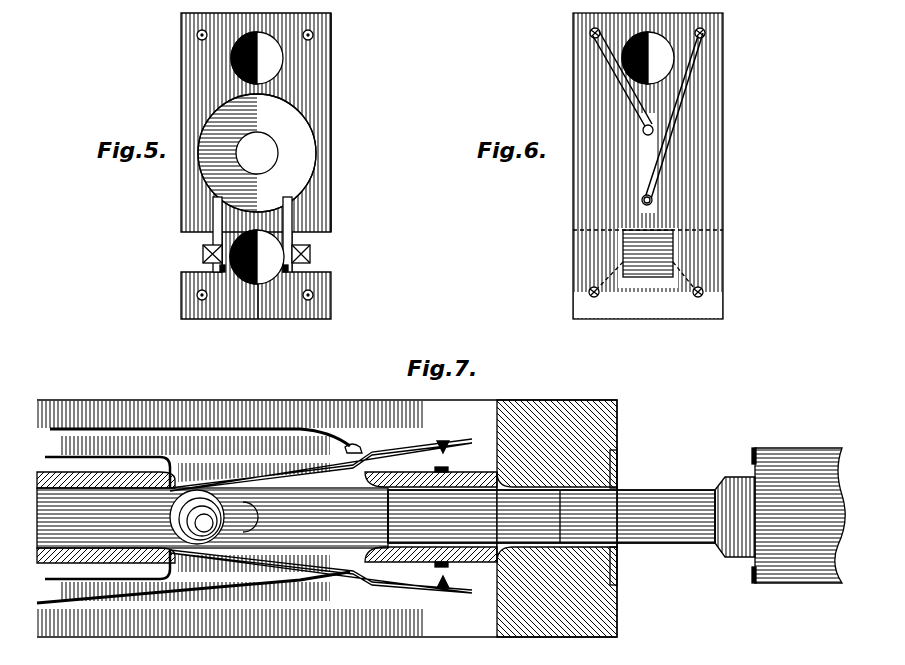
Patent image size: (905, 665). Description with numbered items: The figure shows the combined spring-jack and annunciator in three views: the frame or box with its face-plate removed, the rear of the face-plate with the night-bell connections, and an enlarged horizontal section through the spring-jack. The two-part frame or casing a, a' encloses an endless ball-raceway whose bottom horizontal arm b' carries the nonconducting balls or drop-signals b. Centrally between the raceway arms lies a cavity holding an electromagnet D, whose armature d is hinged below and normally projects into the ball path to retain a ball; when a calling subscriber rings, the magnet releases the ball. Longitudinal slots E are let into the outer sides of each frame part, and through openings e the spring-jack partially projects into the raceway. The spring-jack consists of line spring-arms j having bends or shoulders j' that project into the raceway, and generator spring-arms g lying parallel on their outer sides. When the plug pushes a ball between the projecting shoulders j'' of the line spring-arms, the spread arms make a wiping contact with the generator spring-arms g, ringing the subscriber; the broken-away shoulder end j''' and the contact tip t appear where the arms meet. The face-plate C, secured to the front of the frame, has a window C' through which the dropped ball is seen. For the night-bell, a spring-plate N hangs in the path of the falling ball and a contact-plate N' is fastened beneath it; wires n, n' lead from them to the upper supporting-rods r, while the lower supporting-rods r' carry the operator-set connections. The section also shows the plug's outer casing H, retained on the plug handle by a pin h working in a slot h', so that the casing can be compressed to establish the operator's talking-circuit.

In FIG. 5, the frame part a is at (240, 166).
In FIG. 5, the frame part a' is at (345, 122).
In FIG. 5, the electromagnet D is at (262, 130).
In FIG. 5, the armature d is at (264, 175).
In FIG. 5, the longitudinal recesses or slots E is at (181, 232).
In FIG. 7, the longitudinal recesses or slots E is at (222, 402).
In FIG. 5, the bottom horizontal arm b' is at (257, 268).
In FIG. 7, the bottom horizontal arm b' is at (212, 517).
In FIG. 6, the upper supporting-rods r is at (640, 37).
In FIG. 6, the wire n is at (598, 83).
In FIG. 6, the face-plate C is at (659, 166).
In FIG. 7, the face-plate C is at (491, 506).
In FIG. 6, the wire n' is at (700, 117).
In FIG. 6, the spring-plate N is at (671, 181).
In FIG. 6, the contact-plate N' is at (598, 208).
In FIG. 6, the window C' is at (648, 253).
In FIG. 6, the lower supporting-rods r' is at (606, 282).
In FIG. 6, the lower right pin r'' is at (685, 283).
In FIG. 7, the generator spring-arms g is at (262, 432).
In FIG. 7, the line spring-arms j is at (107, 508).
In FIG. 7, the bends or shoulders j' is at (321, 465).
In FIG. 7, the projecting shoulders j'' is at (321, 571).
In FIG. 7, the lower blade end j''' is at (310, 569).
In FIG. 7, the openings e is at (283, 480).
In FIG. 7, the contact tip t is at (350, 447).
In FIG. 7, the nonconducting balls or drop-signals b is at (197, 517).
In FIG. 7, the pin h is at (625, 466).
In FIG. 7, the slot h' is at (630, 567).
In FIG. 7, the outer casing H is at (780, 515).